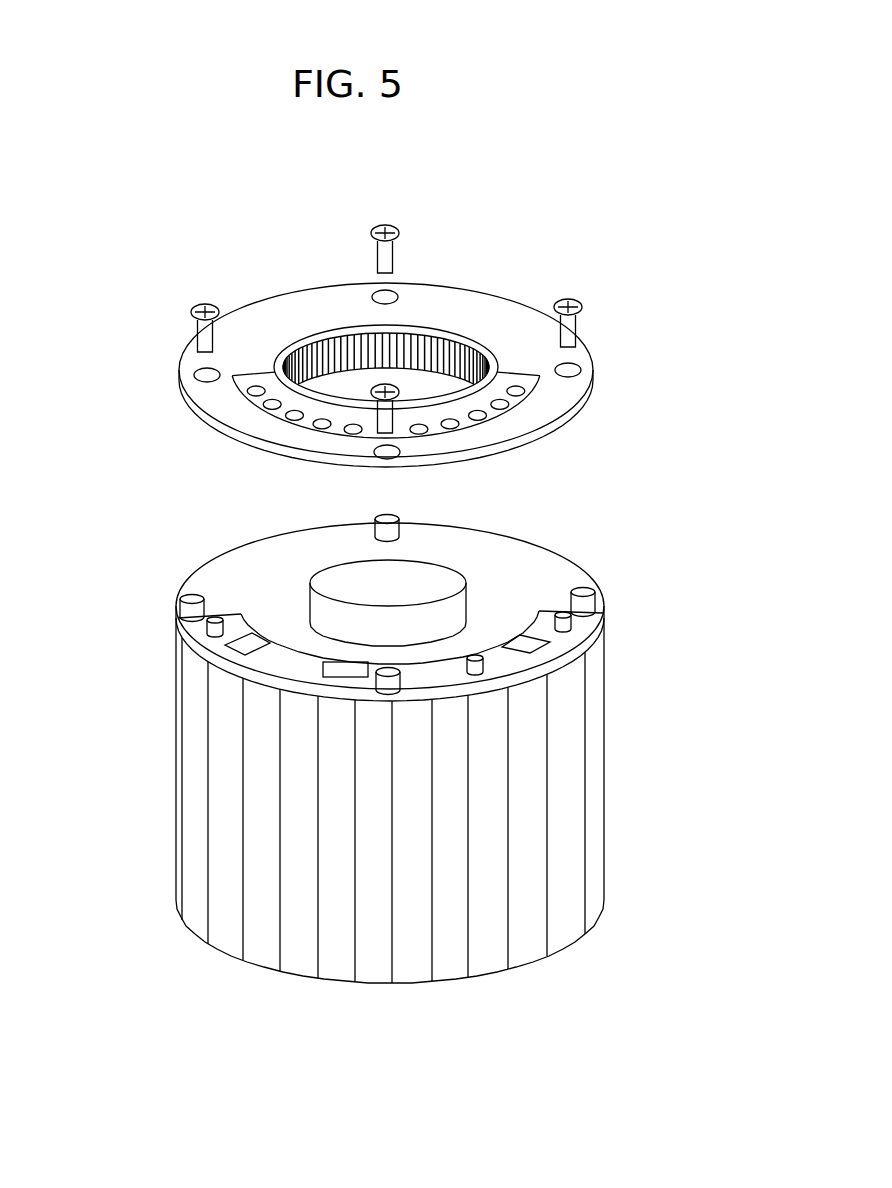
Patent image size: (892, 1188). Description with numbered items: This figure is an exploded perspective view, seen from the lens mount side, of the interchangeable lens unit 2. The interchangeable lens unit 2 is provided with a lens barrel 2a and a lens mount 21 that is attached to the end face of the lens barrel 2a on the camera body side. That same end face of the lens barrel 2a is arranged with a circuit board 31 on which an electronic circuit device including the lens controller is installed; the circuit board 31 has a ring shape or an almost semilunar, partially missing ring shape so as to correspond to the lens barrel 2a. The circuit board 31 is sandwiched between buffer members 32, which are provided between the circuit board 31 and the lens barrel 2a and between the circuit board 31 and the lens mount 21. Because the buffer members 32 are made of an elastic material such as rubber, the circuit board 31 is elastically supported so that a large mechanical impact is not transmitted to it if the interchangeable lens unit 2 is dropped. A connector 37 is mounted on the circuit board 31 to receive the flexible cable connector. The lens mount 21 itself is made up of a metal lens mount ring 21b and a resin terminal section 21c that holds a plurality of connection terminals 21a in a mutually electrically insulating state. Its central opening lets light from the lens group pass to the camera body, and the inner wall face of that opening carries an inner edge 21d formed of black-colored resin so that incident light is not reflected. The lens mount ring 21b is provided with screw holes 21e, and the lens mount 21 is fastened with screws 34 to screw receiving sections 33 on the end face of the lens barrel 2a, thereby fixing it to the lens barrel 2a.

The interchangeable lens unit 2 is at (140, 297).
The lens barrel 2a is at (565, 552).
The lens mount 21 is at (178, 372).
The connection terminals 21a is at (515, 382).
The lens mount ring 21b is at (237, 425).
The terminal section 21c is at (525, 400).
The inner edge 21d is at (437, 340).
The screw holes 21e is at (390, 298).
The circuit board 31 is at (522, 670).
The buffer members 32 is at (210, 628).
The screw receiving sections 33 is at (190, 600).
The screws 34 is at (373, 233).
The connector 37 is at (335, 668).